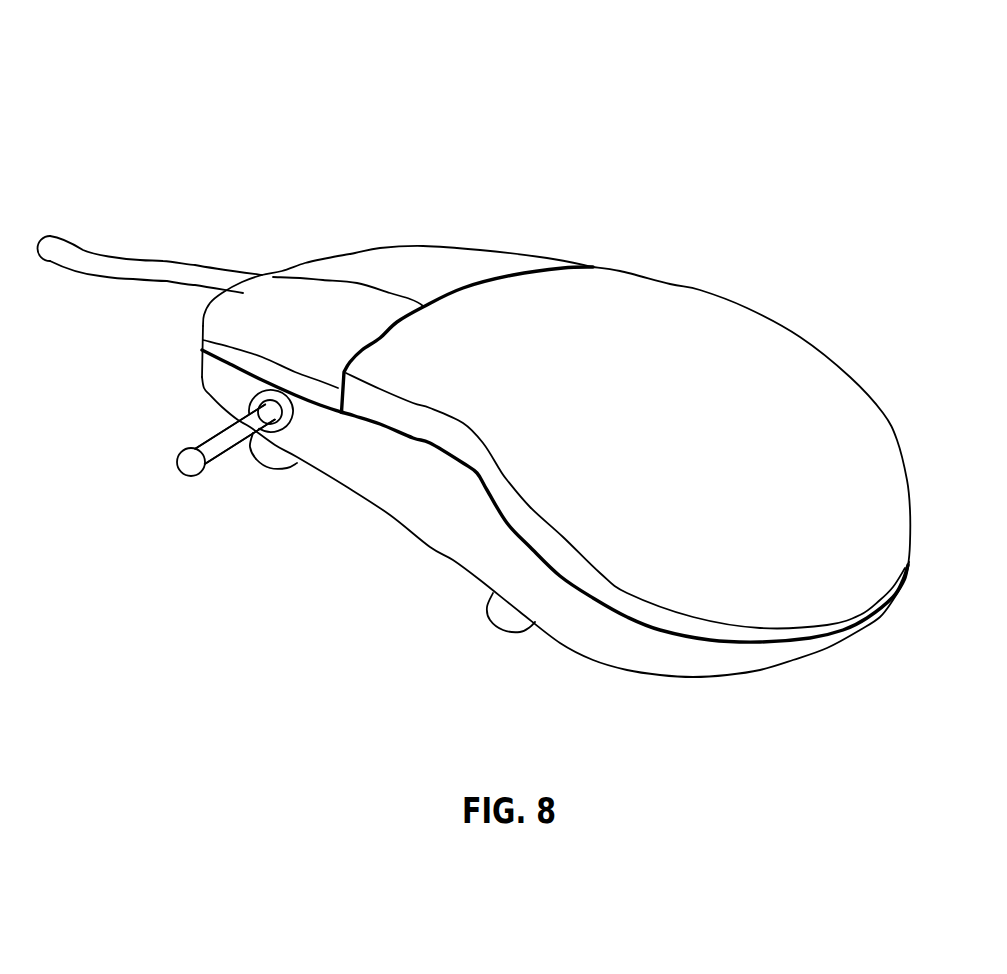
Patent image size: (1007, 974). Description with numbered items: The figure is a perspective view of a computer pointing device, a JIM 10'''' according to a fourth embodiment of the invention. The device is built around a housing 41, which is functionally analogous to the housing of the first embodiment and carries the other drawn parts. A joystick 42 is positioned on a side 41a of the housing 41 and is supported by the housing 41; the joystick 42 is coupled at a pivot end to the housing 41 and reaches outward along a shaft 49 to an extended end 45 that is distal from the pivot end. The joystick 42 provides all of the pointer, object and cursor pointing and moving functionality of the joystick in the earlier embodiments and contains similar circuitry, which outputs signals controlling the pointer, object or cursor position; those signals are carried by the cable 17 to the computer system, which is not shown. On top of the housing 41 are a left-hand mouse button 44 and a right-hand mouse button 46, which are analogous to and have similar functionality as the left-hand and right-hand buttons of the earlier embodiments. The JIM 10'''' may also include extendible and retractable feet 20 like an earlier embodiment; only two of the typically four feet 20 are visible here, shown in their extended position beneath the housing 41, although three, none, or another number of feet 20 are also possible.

The JIM 10'''' is at (625, 324).
The cable 17 is at (163, 262).
The extendible/retractable feet 20 is at (265, 470).
The housing 41 is at (712, 332).
The side of housing 41a is at (392, 515).
The joystick 42 is at (214, 458).
The left-hand mouse button 44 is at (250, 332).
The extended end 45 is at (177, 462).
The right-hand mouse button 46 is at (455, 253).
The shaft 49 is at (217, 433).